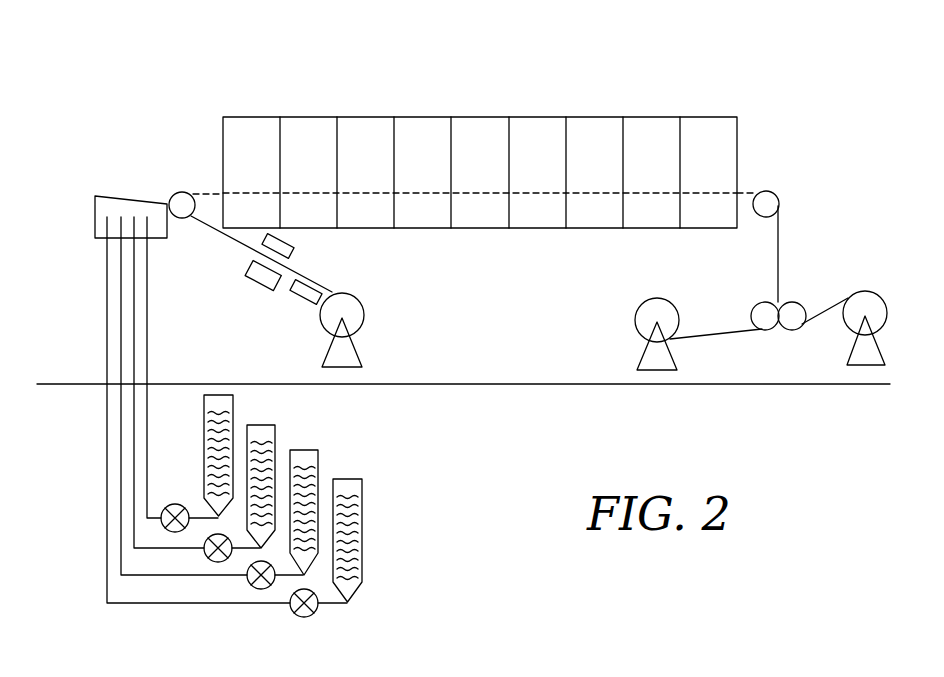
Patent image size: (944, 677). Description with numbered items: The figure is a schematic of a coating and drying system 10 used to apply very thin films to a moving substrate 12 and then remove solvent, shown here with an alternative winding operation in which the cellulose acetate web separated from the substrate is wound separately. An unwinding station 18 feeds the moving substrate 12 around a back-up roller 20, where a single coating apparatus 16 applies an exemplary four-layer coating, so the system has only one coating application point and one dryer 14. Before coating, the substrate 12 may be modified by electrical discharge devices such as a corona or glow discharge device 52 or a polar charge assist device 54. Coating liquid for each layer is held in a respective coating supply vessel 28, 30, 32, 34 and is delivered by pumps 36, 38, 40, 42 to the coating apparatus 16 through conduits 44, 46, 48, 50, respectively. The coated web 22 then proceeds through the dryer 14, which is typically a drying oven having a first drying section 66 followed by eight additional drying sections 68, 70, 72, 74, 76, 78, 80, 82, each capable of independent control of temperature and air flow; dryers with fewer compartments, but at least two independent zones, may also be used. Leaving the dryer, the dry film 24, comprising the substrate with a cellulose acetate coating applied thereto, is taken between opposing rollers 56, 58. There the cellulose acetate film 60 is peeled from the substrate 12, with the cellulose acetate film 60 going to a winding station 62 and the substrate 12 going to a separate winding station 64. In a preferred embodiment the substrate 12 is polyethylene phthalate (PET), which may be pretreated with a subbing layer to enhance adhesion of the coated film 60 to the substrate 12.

The coating and drying system 10 is at (606, 80).
The substrate 12 is at (214, 238).
The dryer 14 is at (383, 103).
The coating apparatus 16 is at (95, 208).
The unwinding station 18 is at (352, 318).
The back-up roller 20 is at (172, 189).
The coated web 22 is at (195, 188).
The dry film 24 is at (782, 220).
The coating supply vessel 28 is at (233, 408).
The coating supply vessel 30 is at (275, 432).
The coating supply vessel 32 is at (318, 460).
The coating supply vessel 34 is at (362, 519).
The pump 36 is at (176, 504).
The pump 38 is at (204, 556).
The pump 40 is at (247, 585).
The pump 42 is at (306, 617).
The conduit 44 is at (147, 354).
The conduit 46 is at (134, 323).
The conduit 48 is at (121, 291).
The conduit 50 is at (107, 268).
The corona or glow discharge device 52 is at (292, 298).
The polar charge assist device 54 is at (290, 258).
The opposing roller 56 is at (756, 302).
The opposing roller 58 is at (802, 302).
The cellulose acetate film 60 is at (830, 322).
The winding station 62 is at (867, 292).
The winding station 64 is at (651, 300).
The first drying section 66 is at (264, 161).
The drying section 68 is at (321, 161).
The drying section 70 is at (378, 161).
The drying section 72 is at (435, 161).
The drying section 74 is at (493, 161).
The drying section 76 is at (550, 161).
The drying section 78 is at (607, 161).
The drying section 80 is at (664, 161).
The drying section 82 is at (721, 161).